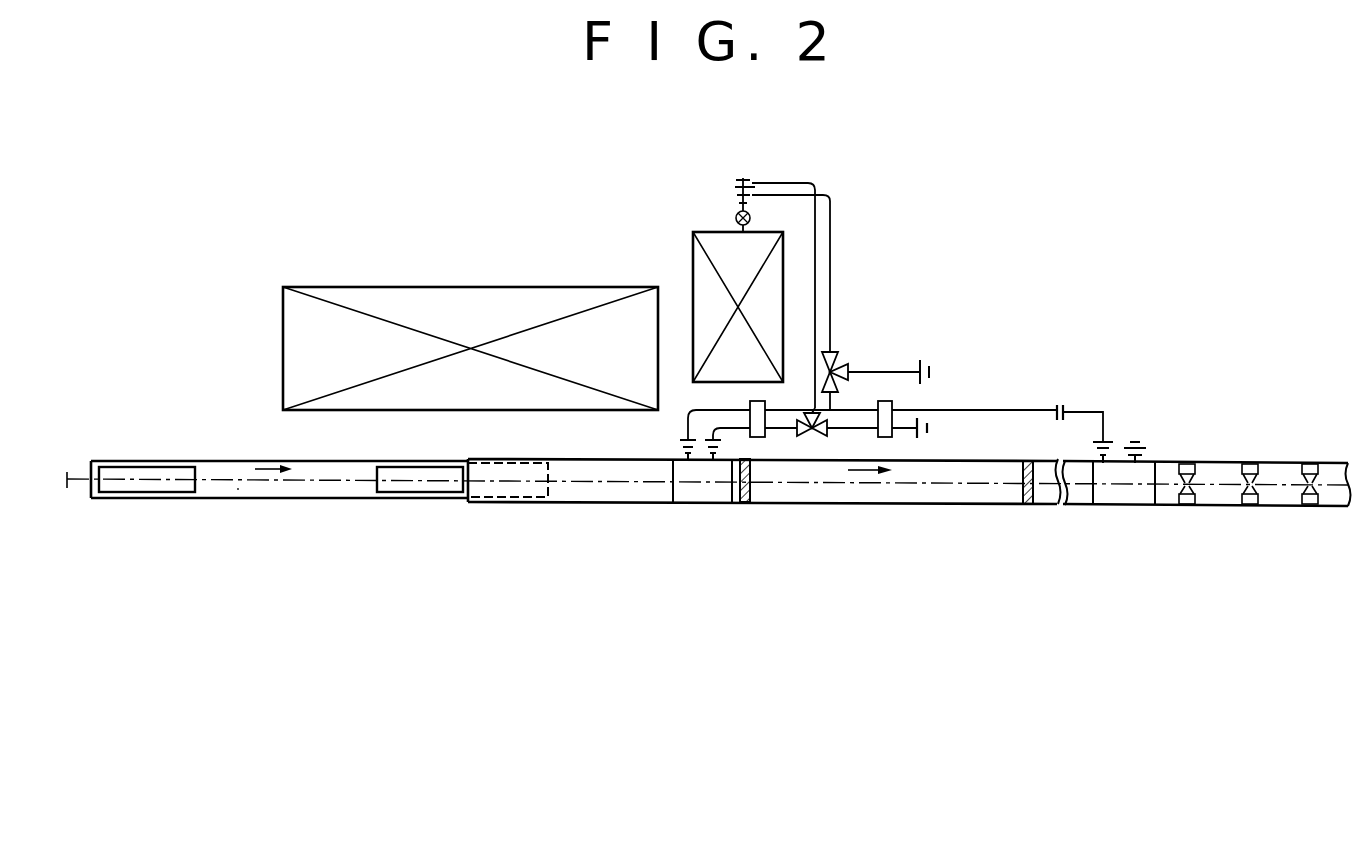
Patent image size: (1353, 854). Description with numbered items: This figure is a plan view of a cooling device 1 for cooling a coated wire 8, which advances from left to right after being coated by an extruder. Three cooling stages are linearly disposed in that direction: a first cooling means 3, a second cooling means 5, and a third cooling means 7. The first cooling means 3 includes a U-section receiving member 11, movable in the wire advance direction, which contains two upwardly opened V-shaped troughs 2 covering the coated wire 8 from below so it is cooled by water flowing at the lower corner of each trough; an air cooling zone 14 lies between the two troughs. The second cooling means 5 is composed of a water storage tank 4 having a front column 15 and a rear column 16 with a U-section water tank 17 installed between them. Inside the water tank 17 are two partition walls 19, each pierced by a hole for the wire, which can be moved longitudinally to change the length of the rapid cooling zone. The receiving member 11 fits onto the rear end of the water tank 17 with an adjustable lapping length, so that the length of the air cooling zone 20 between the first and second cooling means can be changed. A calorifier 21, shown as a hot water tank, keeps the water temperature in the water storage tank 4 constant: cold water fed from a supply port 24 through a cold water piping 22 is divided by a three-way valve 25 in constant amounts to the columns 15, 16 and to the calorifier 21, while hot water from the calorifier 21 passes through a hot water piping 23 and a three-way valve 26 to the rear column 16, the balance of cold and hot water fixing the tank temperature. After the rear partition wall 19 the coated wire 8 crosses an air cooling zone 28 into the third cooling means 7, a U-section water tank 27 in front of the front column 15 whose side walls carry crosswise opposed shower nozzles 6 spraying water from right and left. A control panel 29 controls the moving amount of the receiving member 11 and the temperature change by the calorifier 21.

The cooling device 1 is at (970, 316).
The V-shaped trough 2 is at (152, 493).
The first cooling means 3 is at (227, 456).
The water storage tank 4 is at (872, 499).
The second cooling means 5 is at (770, 510).
The shower nozzles 6 is at (1310, 464).
The third cooling means 7 is at (1216, 455).
The coated wire 8 is at (355, 485).
The receiving member 11 is at (302, 499).
The air cooling zone 14 is at (238, 489).
The front column 15 is at (1128, 506).
The rear column 16 is at (693, 501).
The water tank 17 is at (924, 505).
The partition walls 19 is at (745, 503).
The air cooling zone 20 is at (562, 489).
The calorifier 21 is at (693, 242).
The cold water piping 22 is at (888, 372).
The hot water piping 23 is at (832, 226).
The supply port 24 is at (935, 372).
The three-way valve 25 is at (838, 361).
The three-way valve 26 is at (822, 437).
The water tank 27 is at (1280, 507).
The air cooling zone 28 is at (1082, 499).
The control panel 29 is at (458, 286).